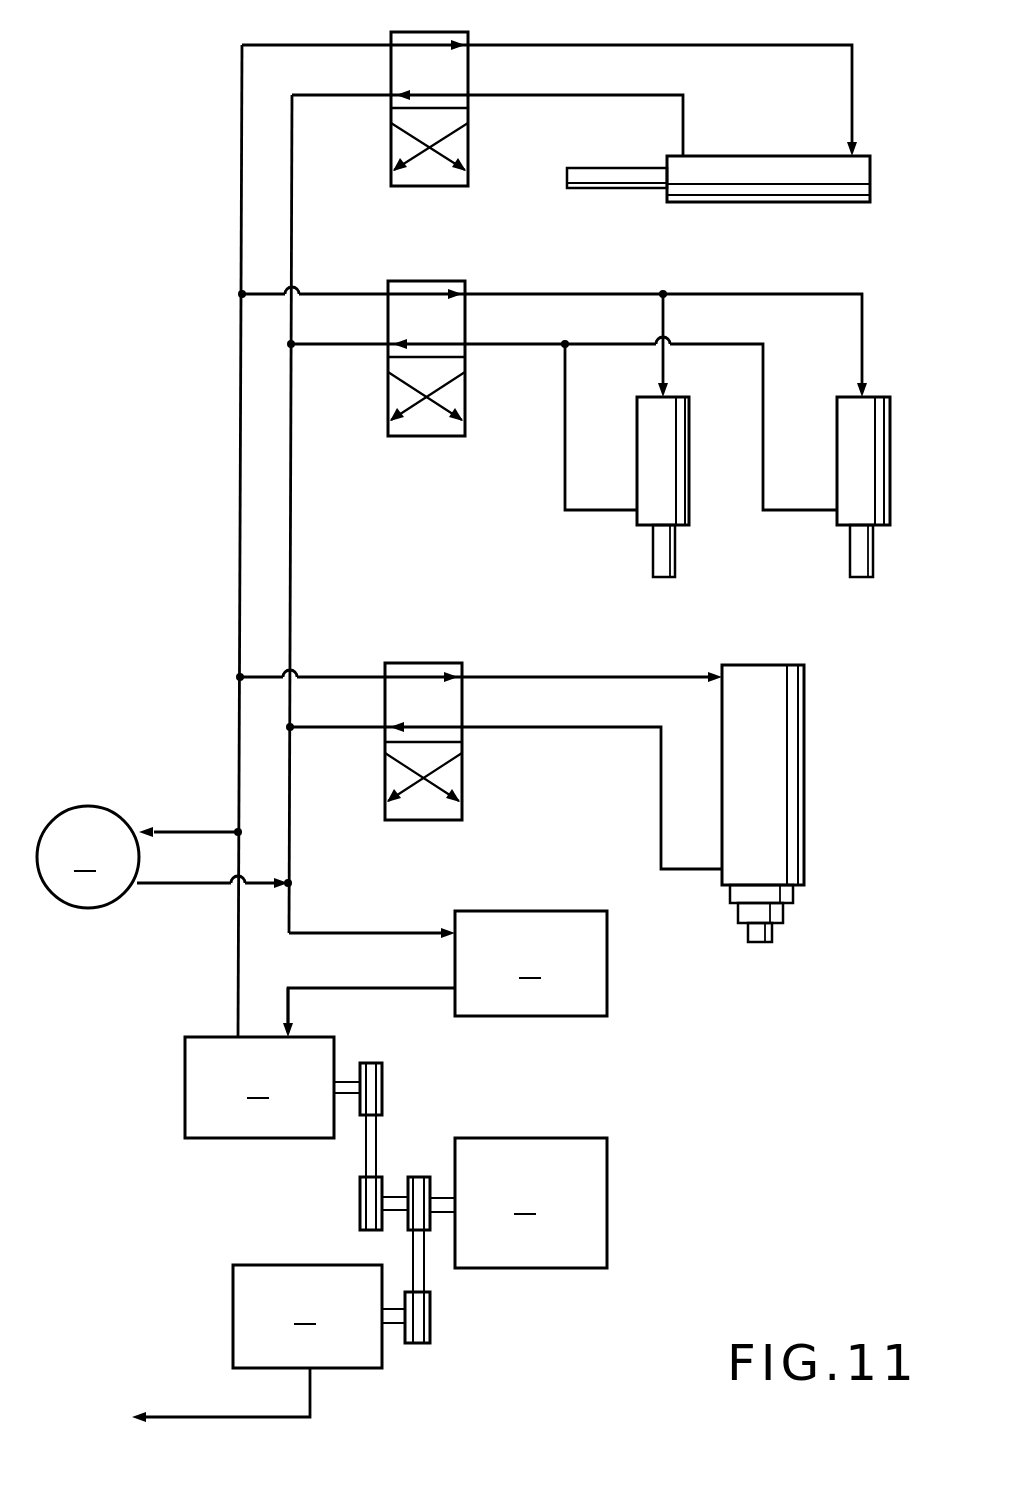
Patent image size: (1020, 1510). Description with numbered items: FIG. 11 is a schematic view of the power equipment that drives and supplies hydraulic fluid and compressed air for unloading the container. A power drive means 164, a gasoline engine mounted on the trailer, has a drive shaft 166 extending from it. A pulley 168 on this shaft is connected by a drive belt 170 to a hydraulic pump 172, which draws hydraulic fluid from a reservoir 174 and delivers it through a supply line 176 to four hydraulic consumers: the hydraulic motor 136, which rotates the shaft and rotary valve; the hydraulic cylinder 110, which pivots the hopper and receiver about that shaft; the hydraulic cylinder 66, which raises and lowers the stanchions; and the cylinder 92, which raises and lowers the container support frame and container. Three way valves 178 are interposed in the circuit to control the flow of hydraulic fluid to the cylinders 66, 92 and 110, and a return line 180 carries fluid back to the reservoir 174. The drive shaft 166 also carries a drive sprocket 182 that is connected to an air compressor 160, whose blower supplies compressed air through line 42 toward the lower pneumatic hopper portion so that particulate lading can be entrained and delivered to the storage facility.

The line 42 is at (193, 1414).
The hydraulic cylinder 66 is at (652, 513).
The cylinder 92 is at (775, 783).
The hydraulic cylinder 110 is at (753, 168).
The hydraulic motor 136 is at (92, 815).
The air compressor 160 is at (245, 1303).
The power drive means 164 is at (592, 1193).
The drive shaft 166 is at (441, 1198).
The pulley 168 is at (360, 1213).
The drive belt 170 is at (366, 1143).
The hydraulic pump 172 is at (198, 1080).
The reservoir 174 is at (588, 1004).
The supply line 176 is at (235, 985).
The three way valves 178 is at (440, 188).
The return line 180 is at (333, 930).
The drive sprocket 182 is at (410, 1185).